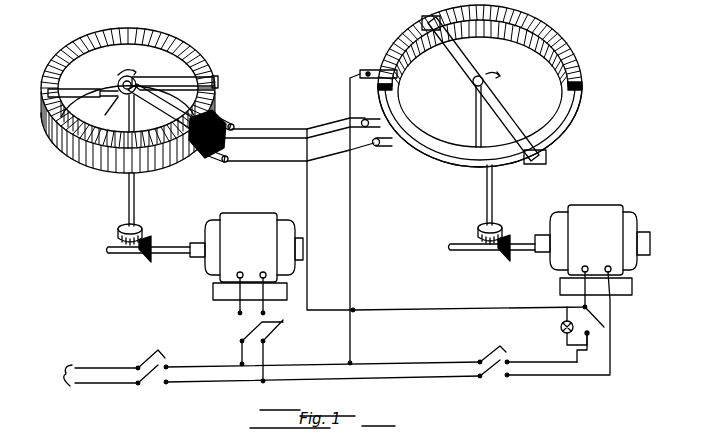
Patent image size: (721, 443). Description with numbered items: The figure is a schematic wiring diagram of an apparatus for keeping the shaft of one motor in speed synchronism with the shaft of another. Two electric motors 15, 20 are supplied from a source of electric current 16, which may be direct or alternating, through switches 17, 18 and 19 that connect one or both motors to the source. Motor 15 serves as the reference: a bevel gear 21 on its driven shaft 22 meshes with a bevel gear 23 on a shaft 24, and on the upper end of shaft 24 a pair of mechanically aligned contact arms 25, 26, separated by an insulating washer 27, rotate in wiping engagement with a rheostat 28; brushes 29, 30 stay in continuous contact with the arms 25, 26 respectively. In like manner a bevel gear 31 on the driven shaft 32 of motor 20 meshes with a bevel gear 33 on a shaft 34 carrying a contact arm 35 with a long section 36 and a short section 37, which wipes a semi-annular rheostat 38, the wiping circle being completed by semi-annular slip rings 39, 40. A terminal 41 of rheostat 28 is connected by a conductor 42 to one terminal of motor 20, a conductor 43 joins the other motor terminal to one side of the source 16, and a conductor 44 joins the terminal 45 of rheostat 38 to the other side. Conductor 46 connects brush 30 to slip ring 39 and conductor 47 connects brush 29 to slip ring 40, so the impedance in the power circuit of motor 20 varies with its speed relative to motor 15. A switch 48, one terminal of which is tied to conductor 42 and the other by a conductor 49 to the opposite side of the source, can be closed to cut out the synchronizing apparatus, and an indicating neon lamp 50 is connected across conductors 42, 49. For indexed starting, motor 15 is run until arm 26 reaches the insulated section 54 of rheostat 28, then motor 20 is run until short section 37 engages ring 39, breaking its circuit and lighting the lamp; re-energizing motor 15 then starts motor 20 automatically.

The electric motor 15 is at (258, 252).
The source of electric current 16 is at (322, 376).
The switch 17 is at (147, 360).
The switch 18 is at (278, 332).
The switch 19 is at (484, 352).
The electric motor 20 is at (604, 249).
The bevel gear 21 is at (151, 249).
The driven shaft 22 is at (112, 255).
The bevel gear 23 is at (141, 231).
The shaft 24 is at (128, 205).
The contact arm 25 is at (46, 94).
The contact arm 26 is at (215, 78).
The insulating washer 27 is at (110, 108).
The rheostat 28 is at (180, 43).
The brush 29 is at (172, 110).
The brush 30 is at (174, 90).
The bevel gear 31 is at (500, 243).
The driven shaft 32 is at (531, 243).
The bevel gear 33 is at (496, 226).
The shaft 34 is at (486, 198).
The contact arm 35 is at (501, 83).
The long section 36 is at (511, 107).
The short section 37 is at (453, 80).
The rheostat 38 is at (577, 63).
The slip ring 39 is at (577, 108).
The slip ring 40 is at (571, 130).
The terminal 41 is at (232, 125).
The conductor 42 is at (309, 232).
The conductor 43 is at (612, 310).
The conductor 44 is at (351, 196).
The terminal 45 is at (350, 77).
The conductor 46 is at (336, 136).
The conductor 47 is at (270, 172).
The switch 48 is at (606, 330).
The conductor 49 is at (580, 352).
The indicating neon lamp 50 is at (560, 327).
The insulated section 54 is at (197, 163).